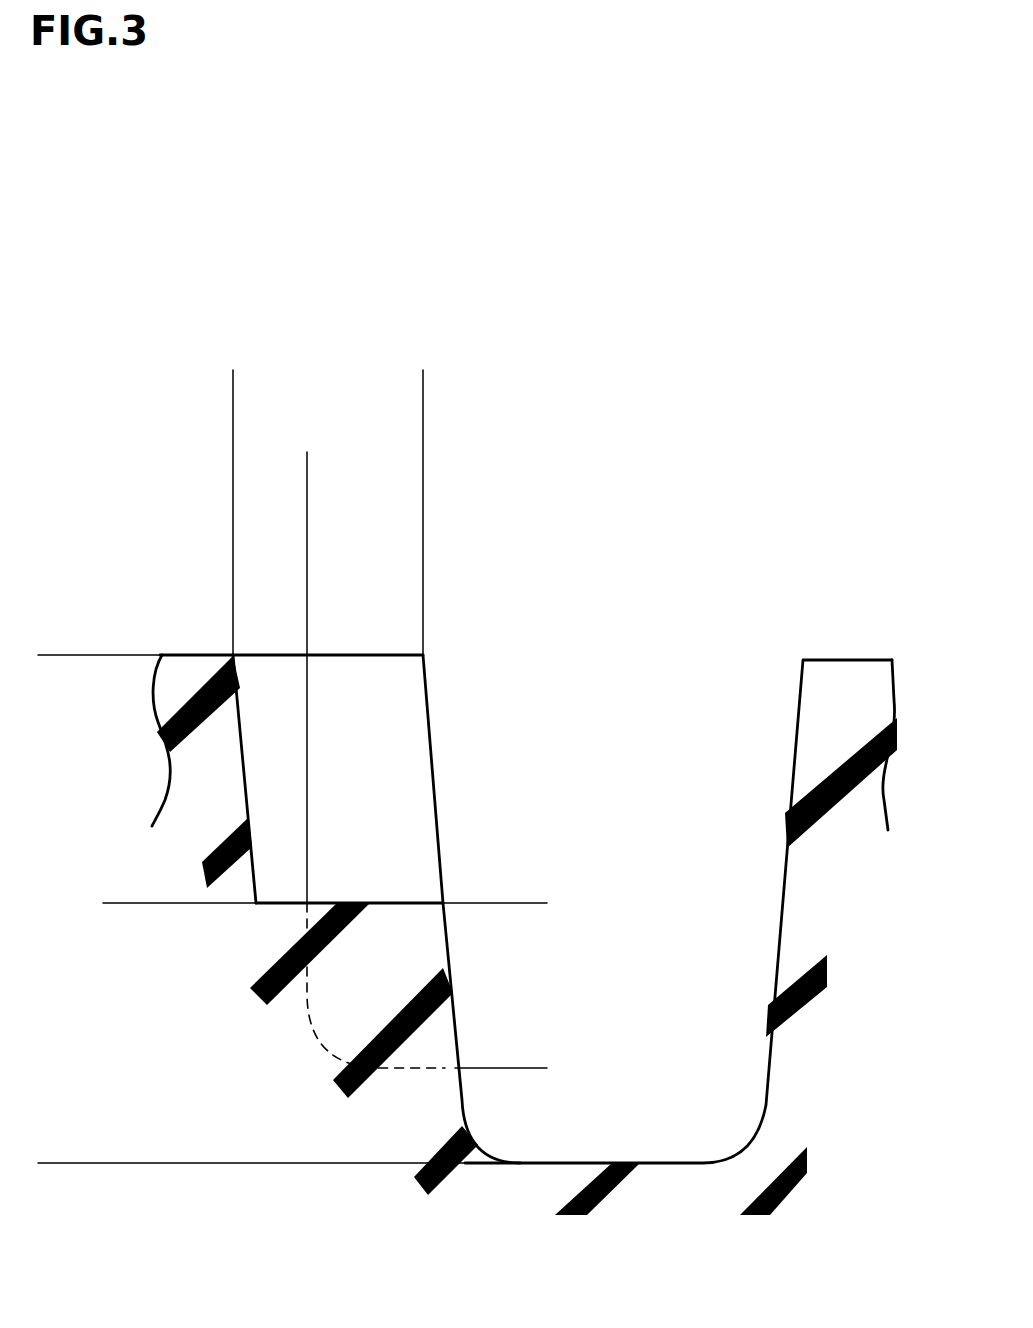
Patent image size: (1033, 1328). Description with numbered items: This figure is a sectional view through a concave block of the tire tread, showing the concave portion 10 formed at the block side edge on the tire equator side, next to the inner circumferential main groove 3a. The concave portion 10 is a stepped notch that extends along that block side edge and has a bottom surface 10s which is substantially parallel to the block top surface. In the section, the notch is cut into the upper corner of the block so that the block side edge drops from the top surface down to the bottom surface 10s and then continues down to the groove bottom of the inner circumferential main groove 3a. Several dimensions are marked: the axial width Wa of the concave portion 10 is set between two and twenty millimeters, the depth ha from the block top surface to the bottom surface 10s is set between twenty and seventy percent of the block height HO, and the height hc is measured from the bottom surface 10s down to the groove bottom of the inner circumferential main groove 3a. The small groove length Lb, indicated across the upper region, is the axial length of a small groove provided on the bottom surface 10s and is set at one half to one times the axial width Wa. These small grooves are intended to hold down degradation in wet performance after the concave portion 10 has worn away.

The concave portion 10 is at (363, 797).
The bottom surface 10s is at (400, 903).
The inner circumferential main groove 3a is at (663, 862).
The axial width Wa is at (423, 378).
The small groove length Lb is at (423, 460).
The block height HO is at (45, 655).
The depth ha is at (103, 655).
The small groove depth hb is at (540, 903).
The height hc is at (103, 903).